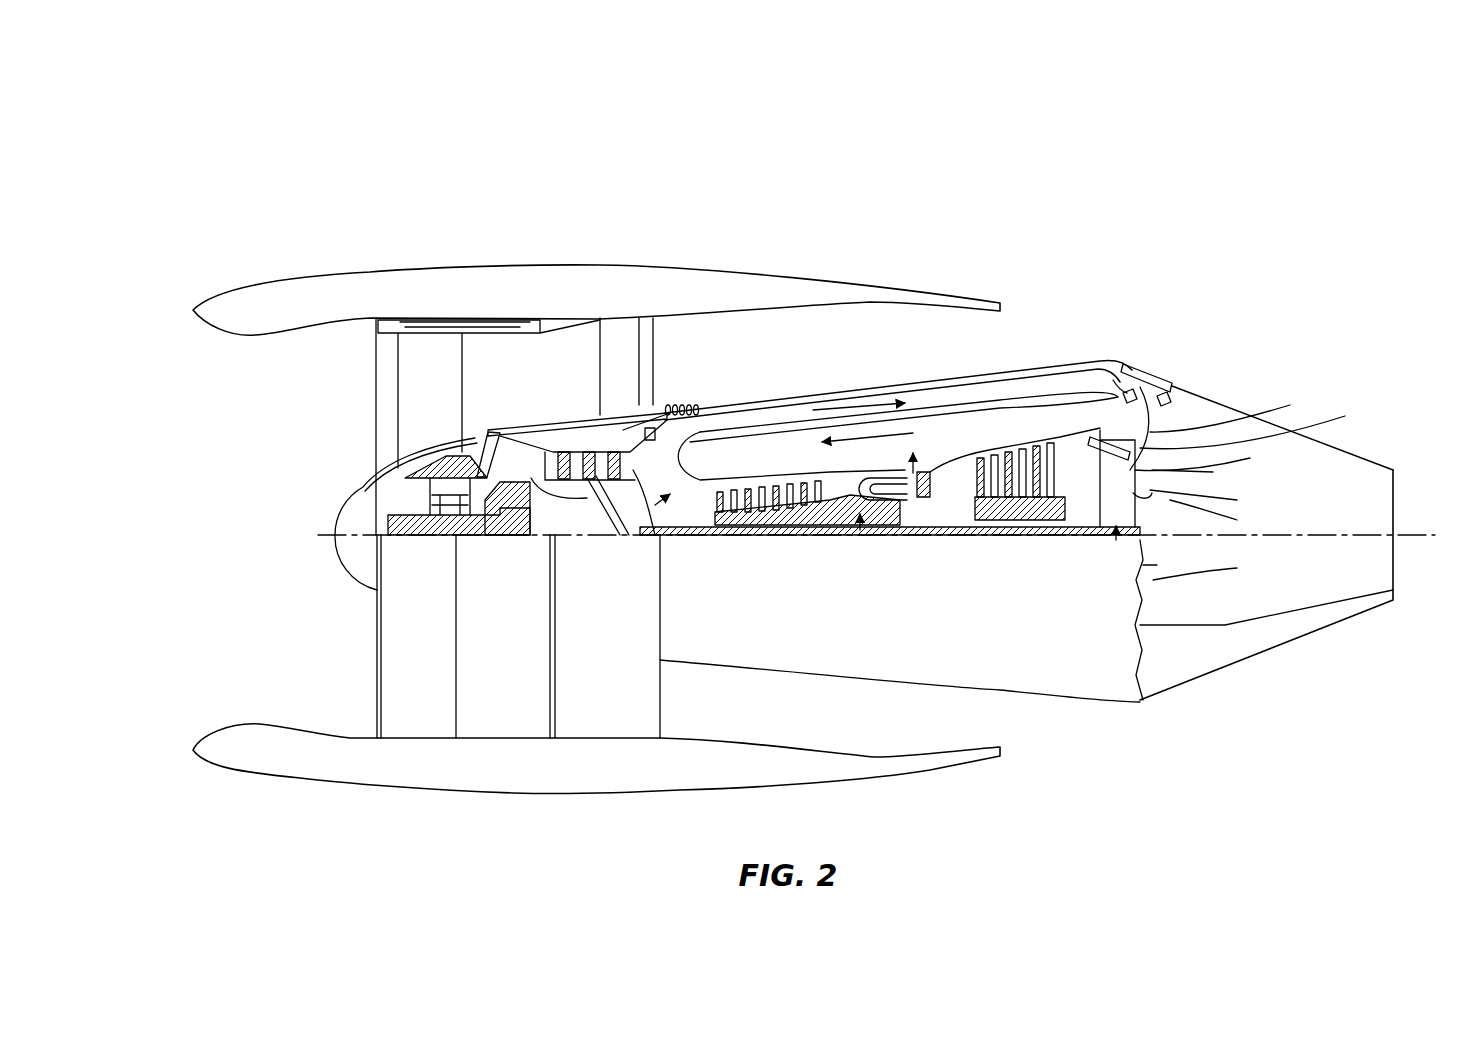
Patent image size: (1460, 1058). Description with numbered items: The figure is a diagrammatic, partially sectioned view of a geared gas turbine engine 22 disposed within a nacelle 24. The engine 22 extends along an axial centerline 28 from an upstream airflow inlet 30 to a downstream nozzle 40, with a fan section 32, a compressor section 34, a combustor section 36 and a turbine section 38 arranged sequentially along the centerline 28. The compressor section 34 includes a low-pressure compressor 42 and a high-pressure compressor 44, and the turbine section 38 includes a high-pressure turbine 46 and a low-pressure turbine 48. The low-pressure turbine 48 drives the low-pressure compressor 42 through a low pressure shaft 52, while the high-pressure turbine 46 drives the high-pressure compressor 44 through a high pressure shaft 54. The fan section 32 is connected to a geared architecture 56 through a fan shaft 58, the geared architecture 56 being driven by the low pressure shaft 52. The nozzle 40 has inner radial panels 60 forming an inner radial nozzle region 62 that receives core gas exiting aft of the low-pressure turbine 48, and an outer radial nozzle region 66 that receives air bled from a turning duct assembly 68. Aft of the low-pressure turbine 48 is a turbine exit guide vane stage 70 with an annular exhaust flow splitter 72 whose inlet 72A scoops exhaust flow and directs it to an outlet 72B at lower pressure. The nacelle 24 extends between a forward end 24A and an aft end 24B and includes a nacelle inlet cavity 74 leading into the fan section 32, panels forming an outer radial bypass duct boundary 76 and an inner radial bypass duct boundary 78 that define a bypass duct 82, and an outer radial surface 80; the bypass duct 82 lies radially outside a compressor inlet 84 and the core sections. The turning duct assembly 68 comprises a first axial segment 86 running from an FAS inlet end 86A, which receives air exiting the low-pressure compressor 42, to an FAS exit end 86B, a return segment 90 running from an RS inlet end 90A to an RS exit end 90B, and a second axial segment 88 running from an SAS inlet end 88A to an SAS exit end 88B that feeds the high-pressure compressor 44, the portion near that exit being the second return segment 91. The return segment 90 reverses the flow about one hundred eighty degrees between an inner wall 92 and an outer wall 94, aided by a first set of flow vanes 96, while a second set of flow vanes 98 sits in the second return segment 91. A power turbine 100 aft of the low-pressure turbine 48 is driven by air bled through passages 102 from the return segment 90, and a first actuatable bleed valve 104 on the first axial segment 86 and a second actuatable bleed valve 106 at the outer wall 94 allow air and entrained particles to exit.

The geared gas turbine engine 22 is at (1220, 185).
The nacelle 24 is at (865, 268).
The forward end 24A is at (192, 307).
The aft end 24B is at (1003, 306).
The axial centerline 28 is at (1428, 530).
The upstream airflow inlet 30 is at (178, 446).
The fan section 32 is at (434, 316).
The compressor section 34 is at (901, 622).
The combustor section 36 is at (860, 540).
The turbine section 38 is at (957, 450).
The nozzle 40 is at (1374, 626).
The low-pressure compressor 42 is at (592, 447).
The high-pressure compressor 44 is at (786, 460).
The high-pressure turbine 46 is at (928, 540).
The low-pressure turbine 48 is at (1006, 510).
The low pressure shaft 52 is at (690, 660).
The high pressure shaft 54 is at (800, 537).
The geared architecture 56 is at (525, 540).
The fan shaft 58 is at (423, 540).
The inner radial panels 60 is at (1284, 613).
The inner radial nozzle region 62 is at (1298, 595).
The outer radial nozzle region 66 is at (1174, 662).
The turning duct assembly 68 is at (829, 388).
The turbine exit guide vane stage 70 is at (1080, 485).
The annular exhaust flow splitter 72 is at (1154, 470).
The splitter inlet 72A is at (1085, 480).
The splitter outlet 72B is at (1172, 501).
The nacelle inlet cavity 74 is at (244, 687).
The outer radial bypass duct boundary 76 is at (734, 324).
The inner radial bypass duct boundary 78 is at (861, 386).
The outer radial surface 80 is at (518, 264).
The bypass duct 82 is at (843, 346).
The compressor inlet 84 is at (480, 435).
The first axial segment 86 is at (1053, 368).
The FAS inlet end 86A is at (630, 522).
The FAS exit end 86B is at (1113, 378).
The second axial segment 88 is at (890, 530).
The SAS inlet end 88A is at (1048, 502).
The SAS exit end 88B is at (660, 538).
The return segment 90 is at (1160, 420).
The RS inlet end 90A is at (1129, 383).
The RS exit end 90B is at (1044, 500).
The second return segment 91 is at (645, 540).
The inner wall 92 is at (1073, 403).
The outer wall 94 is at (1232, 410).
The first set of flow vanes 96 is at (1133, 363).
The second set of flow vanes 98 is at (703, 440).
The power turbine 100 is at (1113, 542).
The passages 102 is at (1300, 423).
The first actuatable bleed valve 104 is at (677, 398).
The second actuatable bleed valve 106 is at (1177, 381).